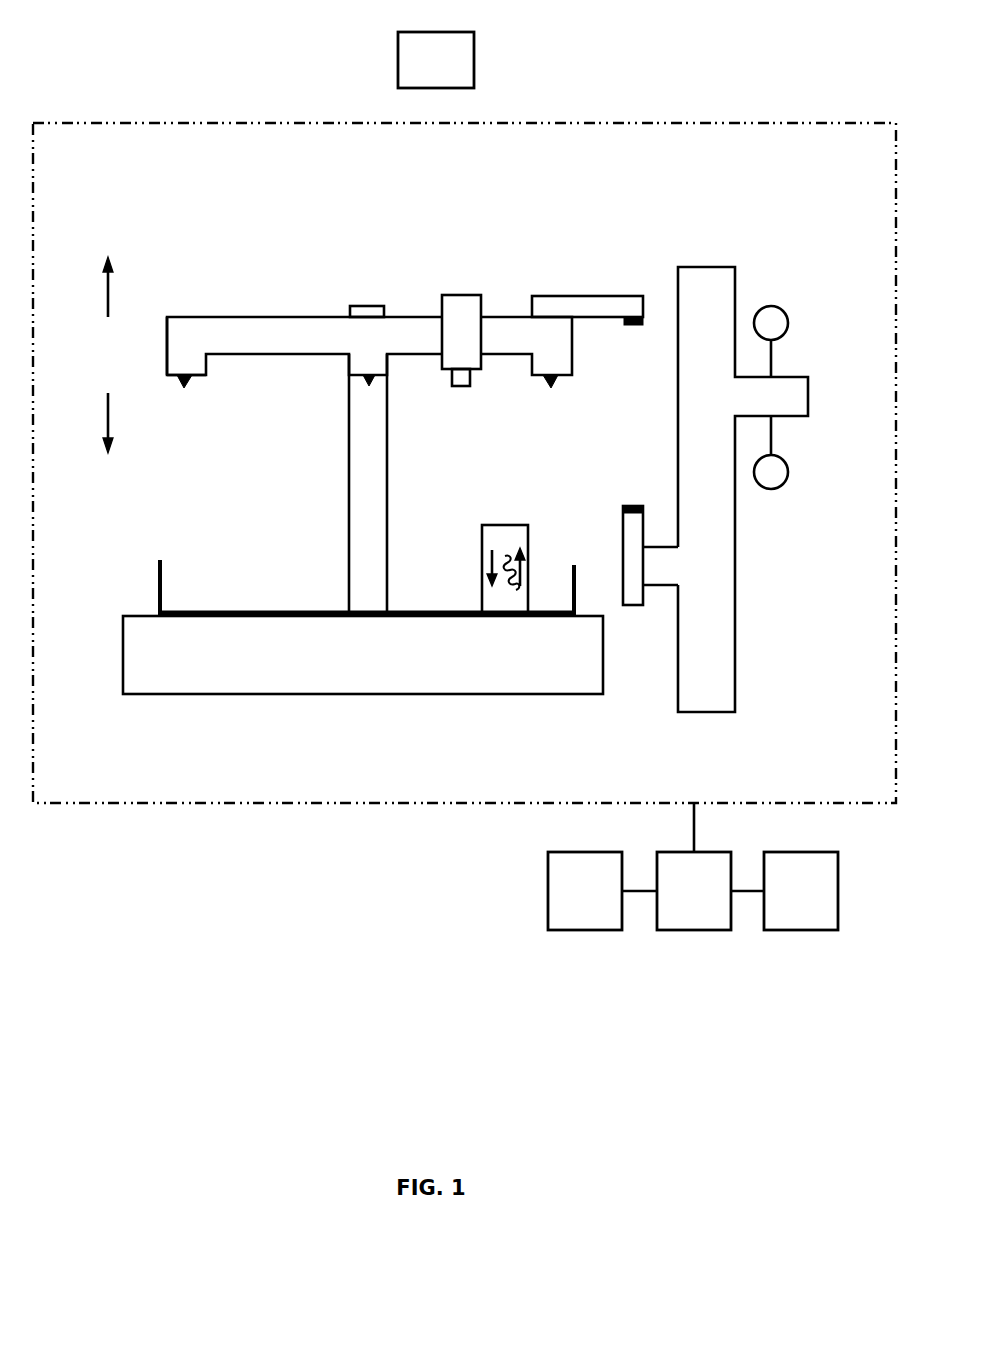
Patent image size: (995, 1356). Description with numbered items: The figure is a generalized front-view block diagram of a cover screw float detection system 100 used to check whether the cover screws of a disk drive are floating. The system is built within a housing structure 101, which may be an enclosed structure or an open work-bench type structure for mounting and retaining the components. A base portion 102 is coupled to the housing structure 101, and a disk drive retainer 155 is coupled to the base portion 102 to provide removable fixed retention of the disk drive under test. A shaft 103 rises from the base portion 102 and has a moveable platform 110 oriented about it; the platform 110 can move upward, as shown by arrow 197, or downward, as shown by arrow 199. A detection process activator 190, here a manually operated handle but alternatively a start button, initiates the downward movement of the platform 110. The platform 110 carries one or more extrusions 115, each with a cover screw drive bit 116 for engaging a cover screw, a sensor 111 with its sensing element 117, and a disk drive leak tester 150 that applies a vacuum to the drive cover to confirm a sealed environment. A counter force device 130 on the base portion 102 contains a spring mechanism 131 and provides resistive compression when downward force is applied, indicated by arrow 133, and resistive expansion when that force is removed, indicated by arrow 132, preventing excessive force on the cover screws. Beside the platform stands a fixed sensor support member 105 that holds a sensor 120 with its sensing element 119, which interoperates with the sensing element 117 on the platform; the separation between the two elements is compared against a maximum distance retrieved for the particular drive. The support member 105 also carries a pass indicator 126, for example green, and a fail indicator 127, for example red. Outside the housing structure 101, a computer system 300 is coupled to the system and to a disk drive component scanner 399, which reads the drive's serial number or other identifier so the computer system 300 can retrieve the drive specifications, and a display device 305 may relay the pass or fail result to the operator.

The cover screw float detection system 100 is at (140, 27).
The housing structure 101 is at (677, 122).
The base portion 102 is at (177, 694).
The shaft 103 is at (375, 597).
The fixed sensor support member 105 is at (713, 647).
The moveable platform 110 is at (332, 327).
The sensor 111 is at (555, 311).
The extrusion 115 is at (185, 348).
The cover screw drive bit 116 is at (186, 378).
The sensing element 117 is at (631, 317).
The sensing element 119 is at (643, 508).
The sensor 120 is at (637, 562).
The pass indicator 126 is at (773, 322).
The fail indicator 127 is at (777, 473).
The counter force device 130 is at (508, 598).
The spring mechanism 131 is at (506, 592).
The arrow 132 is at (522, 565).
The arrow 133 is at (483, 580).
The disk drive leak tester 150 is at (477, 273).
The disk drive retainer 155 is at (432, 617).
The detection process activator 190 is at (418, 122).
The arrow 197 is at (107, 283).
The arrow 199 is at (105, 440).
The computer system 300 is at (675, 902).
The display device 305 is at (782, 902).
The disk drive component scanner 399 is at (566, 902).